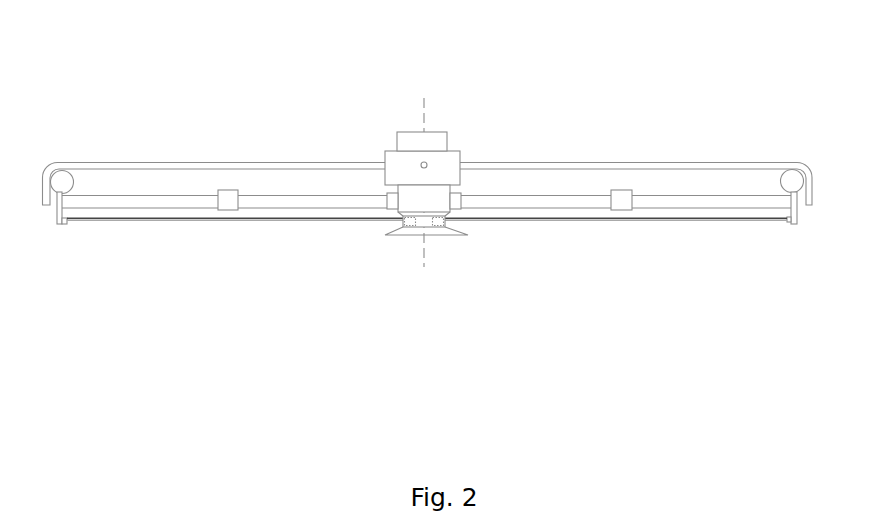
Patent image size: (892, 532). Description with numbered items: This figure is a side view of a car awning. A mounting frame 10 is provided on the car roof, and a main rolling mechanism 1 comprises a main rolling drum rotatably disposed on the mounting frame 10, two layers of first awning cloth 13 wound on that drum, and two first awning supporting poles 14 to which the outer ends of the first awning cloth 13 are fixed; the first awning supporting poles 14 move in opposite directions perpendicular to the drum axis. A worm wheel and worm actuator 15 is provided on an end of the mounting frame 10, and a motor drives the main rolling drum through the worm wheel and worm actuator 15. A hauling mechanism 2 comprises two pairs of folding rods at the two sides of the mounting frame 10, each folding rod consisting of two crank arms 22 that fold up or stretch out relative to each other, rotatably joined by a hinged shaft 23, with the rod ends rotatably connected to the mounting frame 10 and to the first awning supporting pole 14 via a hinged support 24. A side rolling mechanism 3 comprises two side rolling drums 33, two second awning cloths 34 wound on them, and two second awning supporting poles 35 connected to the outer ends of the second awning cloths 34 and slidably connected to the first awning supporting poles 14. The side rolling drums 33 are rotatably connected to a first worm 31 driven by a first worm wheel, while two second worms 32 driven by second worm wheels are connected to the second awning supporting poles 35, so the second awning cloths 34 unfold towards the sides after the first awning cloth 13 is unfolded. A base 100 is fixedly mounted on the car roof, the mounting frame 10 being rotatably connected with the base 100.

The main rolling mechanism 1 is at (370, 138).
The hauling mechanism 2 is at (182, 212).
The side rolling mechanism 3 is at (303, 223).
The mounting frame 10 is at (440, 203).
The first awning cloth 13 is at (474, 169).
The first awning supporting pole 14 is at (795, 188).
The worm wheel and worm actuator 15 is at (426, 163).
The crank arm 22 is at (638, 203).
The hinged shaft 23 is at (218, 212).
The hinged support 24 is at (390, 210).
The first worm 31 is at (415, 226).
The second worm 32 is at (788, 222).
The side rolling drum 33 is at (430, 226).
The second awning cloth 34 is at (277, 220).
The second awning supporting pole 35 is at (790, 221).
The base 100 is at (424, 228).